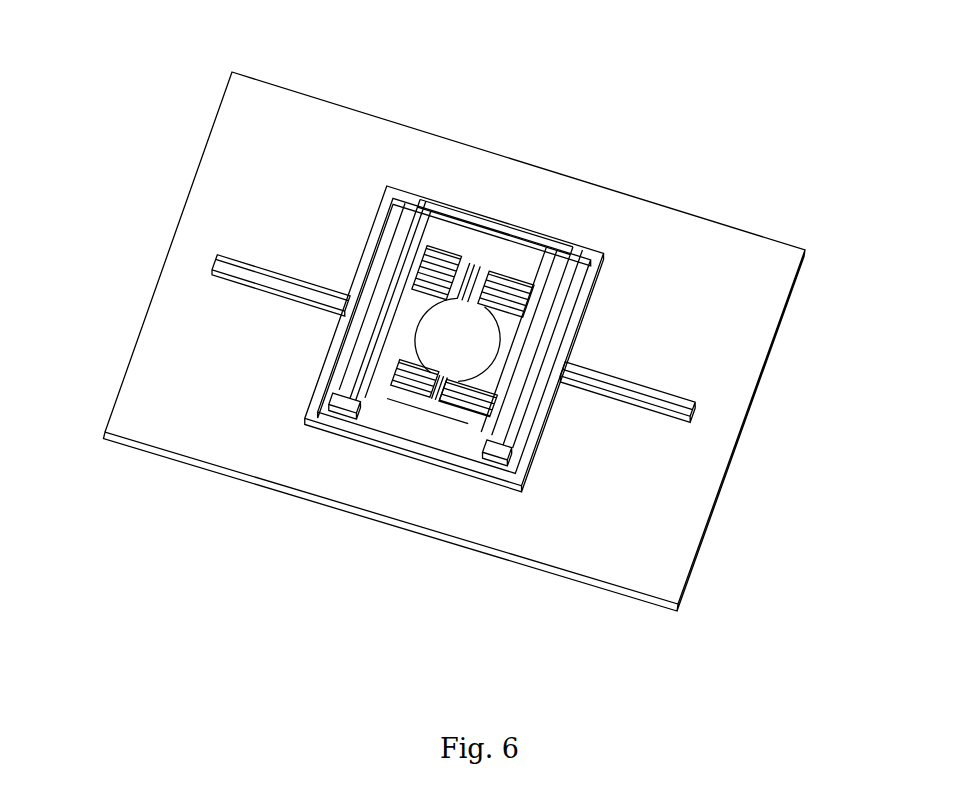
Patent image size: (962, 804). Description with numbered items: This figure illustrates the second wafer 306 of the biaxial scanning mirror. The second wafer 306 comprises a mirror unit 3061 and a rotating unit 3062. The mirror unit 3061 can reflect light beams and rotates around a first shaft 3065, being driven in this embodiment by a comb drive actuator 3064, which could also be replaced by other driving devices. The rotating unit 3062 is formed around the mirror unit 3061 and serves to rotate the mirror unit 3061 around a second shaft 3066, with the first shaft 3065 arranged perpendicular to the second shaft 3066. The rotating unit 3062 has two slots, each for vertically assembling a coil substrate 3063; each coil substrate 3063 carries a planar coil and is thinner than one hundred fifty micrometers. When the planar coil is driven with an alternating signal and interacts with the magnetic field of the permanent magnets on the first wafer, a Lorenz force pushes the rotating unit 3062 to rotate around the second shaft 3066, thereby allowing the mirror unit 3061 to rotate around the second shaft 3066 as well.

The second wafer 306 is at (404, 317).
The mirror unit 3061 is at (467, 318).
The rotating unit 3062 is at (563, 318).
The coil substrate 3063 is at (350, 380).
The comb drive actuator 3064 is at (513, 293).
The first shaft 3065 is at (482, 273).
The second shaft 3066 is at (700, 402).